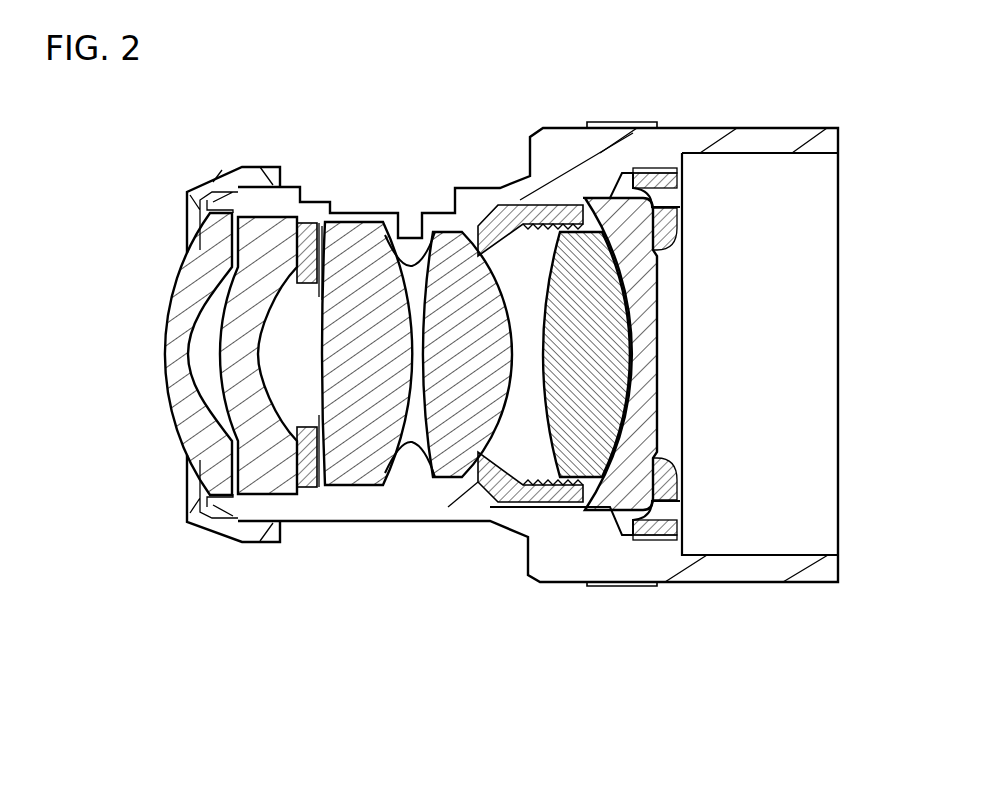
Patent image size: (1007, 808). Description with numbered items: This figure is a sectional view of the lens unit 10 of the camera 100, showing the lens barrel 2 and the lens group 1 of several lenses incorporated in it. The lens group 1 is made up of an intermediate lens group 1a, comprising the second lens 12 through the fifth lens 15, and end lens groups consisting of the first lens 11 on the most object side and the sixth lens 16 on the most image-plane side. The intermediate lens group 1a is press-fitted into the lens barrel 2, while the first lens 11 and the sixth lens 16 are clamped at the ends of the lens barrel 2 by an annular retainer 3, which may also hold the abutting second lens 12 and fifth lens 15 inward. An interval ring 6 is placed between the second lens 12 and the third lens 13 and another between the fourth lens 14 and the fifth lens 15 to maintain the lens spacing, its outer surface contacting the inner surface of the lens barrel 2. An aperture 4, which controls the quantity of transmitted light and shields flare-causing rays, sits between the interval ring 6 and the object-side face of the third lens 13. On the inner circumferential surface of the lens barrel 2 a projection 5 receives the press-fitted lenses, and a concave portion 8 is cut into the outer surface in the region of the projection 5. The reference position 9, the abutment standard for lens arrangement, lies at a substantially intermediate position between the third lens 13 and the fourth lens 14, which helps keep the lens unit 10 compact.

The camera 100 is at (752, 99).
The lens unit 10 is at (278, 118).
The lens group 1 is at (650, 674).
The intermediate lens group 1a is at (563, 622).
The first lens 11 is at (212, 470).
The second lens 12 is at (267, 463).
The third lens 13 is at (332, 463).
The fourth lens 14 is at (453, 463).
The fifth lens 15 is at (572, 437).
The sixth lens 16 is at (630, 443).
The lens barrel 2 is at (568, 150).
The retainer 3 is at (217, 183).
The aperture 4 is at (338, 238).
The projection 5 is at (330, 273).
The interval ring 6 is at (298, 223).
The concave portion 8 is at (437, 210).
The reference position 9 is at (412, 266).